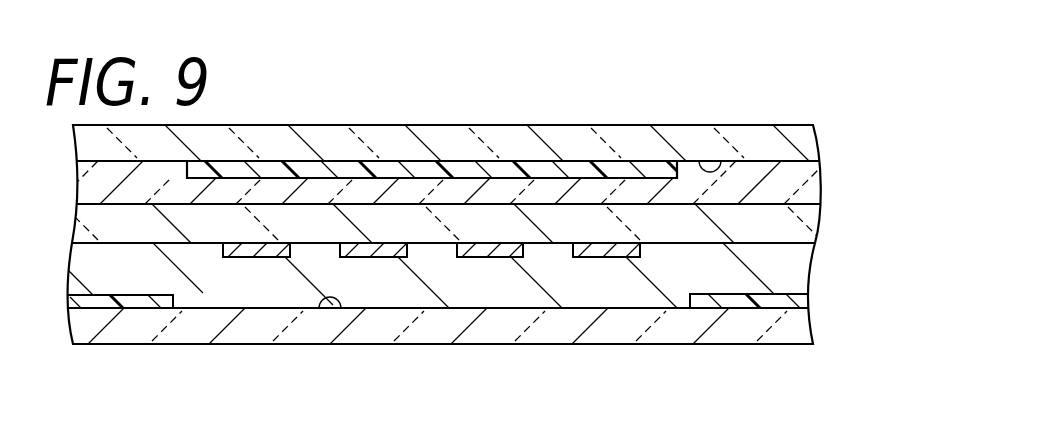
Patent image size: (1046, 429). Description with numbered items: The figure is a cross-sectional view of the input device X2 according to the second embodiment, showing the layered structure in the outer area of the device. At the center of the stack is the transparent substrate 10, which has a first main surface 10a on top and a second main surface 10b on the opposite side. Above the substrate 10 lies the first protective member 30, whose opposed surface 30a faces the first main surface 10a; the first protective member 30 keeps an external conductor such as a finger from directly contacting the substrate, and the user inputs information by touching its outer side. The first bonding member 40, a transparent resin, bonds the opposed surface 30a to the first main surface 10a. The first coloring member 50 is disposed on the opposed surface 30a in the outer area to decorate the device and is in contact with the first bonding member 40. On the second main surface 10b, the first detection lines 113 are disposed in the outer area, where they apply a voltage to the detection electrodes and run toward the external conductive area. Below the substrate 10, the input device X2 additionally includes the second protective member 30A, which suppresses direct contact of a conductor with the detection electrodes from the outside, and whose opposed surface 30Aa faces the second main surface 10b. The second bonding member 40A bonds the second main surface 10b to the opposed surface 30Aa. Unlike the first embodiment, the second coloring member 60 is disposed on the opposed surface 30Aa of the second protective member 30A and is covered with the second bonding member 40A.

The input device X2 is at (667, 49).
The first protective member 30 is at (793, 143).
The opposed surface 30a is at (698, 160).
The first bonding member 40 is at (800, 180).
The first coloring member 50 is at (458, 172).
The substrate 10 is at (805, 224).
The first main surface 10a is at (757, 204).
The second main surface 10b is at (204, 243).
The second bonding member 40A is at (798, 273).
The second protective member 30A is at (805, 328).
The opposed surface 30Aa is at (338, 304).
The first detection line 113 is at (611, 272).
The second coloring member 60 is at (734, 364).